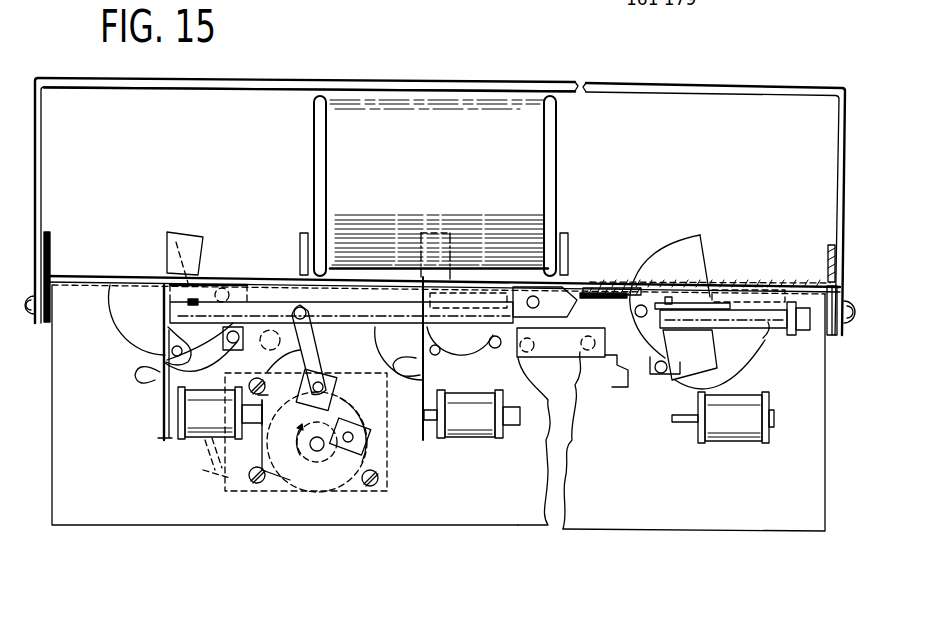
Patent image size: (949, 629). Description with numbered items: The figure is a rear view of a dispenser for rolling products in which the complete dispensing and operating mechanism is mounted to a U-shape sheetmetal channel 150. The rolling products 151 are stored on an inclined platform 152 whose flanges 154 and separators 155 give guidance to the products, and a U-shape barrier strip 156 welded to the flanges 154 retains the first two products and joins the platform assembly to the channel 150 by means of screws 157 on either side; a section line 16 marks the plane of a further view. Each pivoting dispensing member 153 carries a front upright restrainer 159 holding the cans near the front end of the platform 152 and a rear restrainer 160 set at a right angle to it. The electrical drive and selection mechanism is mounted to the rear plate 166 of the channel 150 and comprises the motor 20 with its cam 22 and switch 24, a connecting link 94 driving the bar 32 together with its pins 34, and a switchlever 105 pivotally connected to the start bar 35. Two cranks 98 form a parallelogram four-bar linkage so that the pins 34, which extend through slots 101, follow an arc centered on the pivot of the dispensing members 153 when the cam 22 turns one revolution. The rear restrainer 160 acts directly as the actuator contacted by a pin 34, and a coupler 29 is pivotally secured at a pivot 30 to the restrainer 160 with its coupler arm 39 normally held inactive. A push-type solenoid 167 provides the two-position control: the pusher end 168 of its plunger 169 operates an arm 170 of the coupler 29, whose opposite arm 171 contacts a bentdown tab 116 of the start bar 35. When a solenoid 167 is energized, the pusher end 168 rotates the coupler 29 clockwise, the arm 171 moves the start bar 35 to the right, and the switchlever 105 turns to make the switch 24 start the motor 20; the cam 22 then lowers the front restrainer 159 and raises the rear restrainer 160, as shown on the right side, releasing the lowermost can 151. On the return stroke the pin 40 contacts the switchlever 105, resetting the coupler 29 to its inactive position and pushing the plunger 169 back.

The section line 16 is at (308, 165).
The motor 20 is at (316, 415).
The cam 22 is at (335, 486).
The switch 24 is at (217, 472).
The coupler 29 is at (147, 372).
The pivot 30 is at (171, 329).
The bar 32 is at (592, 372).
The pins 34 is at (240, 350).
The start bar 35 is at (353, 312).
The coupler arm 39 is at (647, 383).
The pin 40 is at (316, 441).
The connecting link 94 is at (320, 432).
The cranks 98 is at (250, 298).
The slots 101 is at (745, 362).
The switchlever 105 is at (318, 337).
The bentdown tab 116 is at (182, 290).
The U-shape sheetmetal channel 150 is at (122, 532).
The rolling products 151 is at (447, 170).
The platform 152 is at (265, 266).
The dispensing member 153 is at (186, 232).
The flanges 154 is at (48, 235).
The separators 155 is at (303, 232).
The U-shape barrier strip 156 is at (482, 78).
The screws 157 is at (25, 312).
The front upright restrainer 159 is at (447, 240).
The rear restrainer 160 is at (104, 297).
The rear plate 166 is at (121, 479).
The solenoid 167 is at (193, 437).
The pusher end 168 is at (435, 433).
The plunger 169 is at (517, 425).
The arm 170 is at (157, 392).
The arm 171 is at (160, 304).